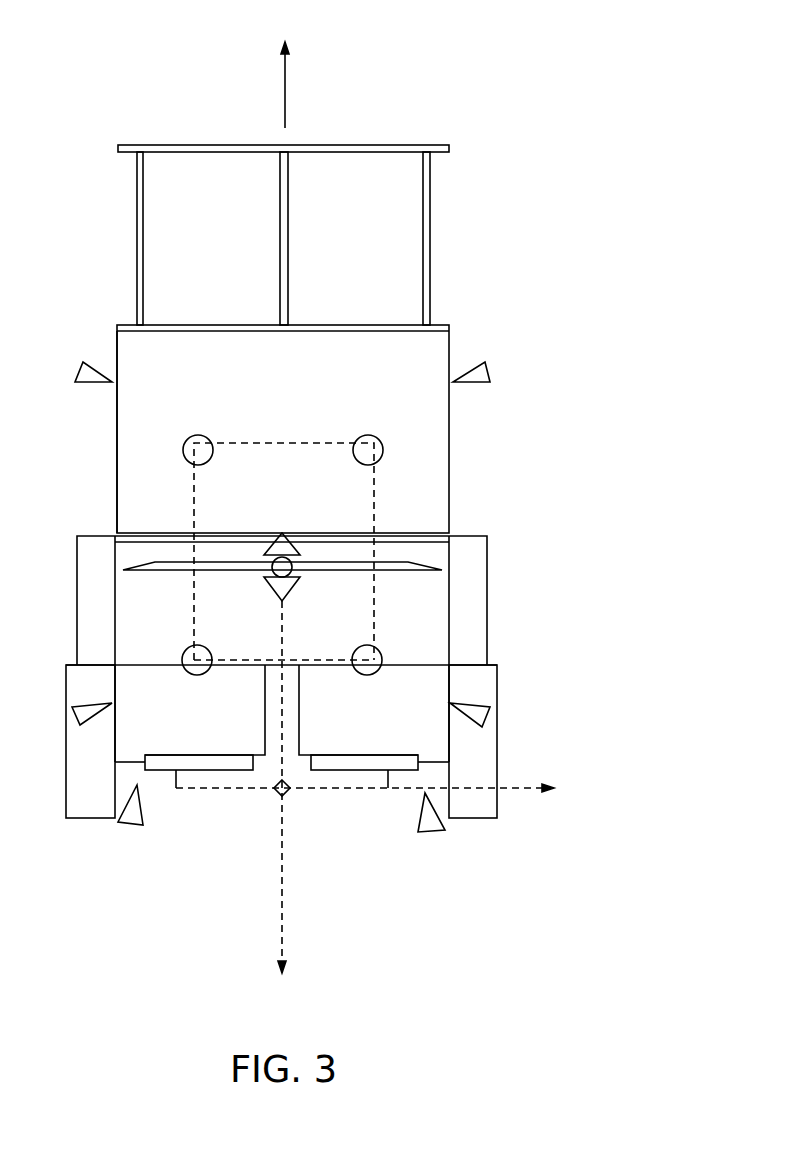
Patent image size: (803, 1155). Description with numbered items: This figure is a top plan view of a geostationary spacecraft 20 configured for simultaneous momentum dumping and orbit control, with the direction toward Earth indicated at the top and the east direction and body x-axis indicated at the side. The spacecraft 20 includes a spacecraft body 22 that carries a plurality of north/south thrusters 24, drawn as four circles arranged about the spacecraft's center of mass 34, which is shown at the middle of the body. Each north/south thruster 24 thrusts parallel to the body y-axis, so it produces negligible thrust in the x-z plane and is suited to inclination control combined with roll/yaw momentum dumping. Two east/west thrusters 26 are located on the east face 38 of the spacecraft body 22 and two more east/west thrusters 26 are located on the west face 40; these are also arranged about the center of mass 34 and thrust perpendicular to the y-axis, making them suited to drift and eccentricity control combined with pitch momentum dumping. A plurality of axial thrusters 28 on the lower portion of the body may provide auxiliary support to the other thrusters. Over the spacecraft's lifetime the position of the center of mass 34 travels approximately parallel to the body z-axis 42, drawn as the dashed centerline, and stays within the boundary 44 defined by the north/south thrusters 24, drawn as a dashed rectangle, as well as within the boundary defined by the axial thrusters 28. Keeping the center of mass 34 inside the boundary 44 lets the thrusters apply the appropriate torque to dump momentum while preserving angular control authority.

The spacecraft 20 is at (350, 508).
The spacecraft body 22 is at (438, 745).
The north/south thrusters 24 is at (200, 435).
The east/west thrusters 26 is at (83, 362).
The axial thrusters 28 is at (137, 828).
The center of mass 34 is at (294, 566).
The east face 38 is at (449, 488).
The west face 40 is at (117, 451).
The z-axis 42 is at (282, 912).
The boundary 44 is at (285, 440).